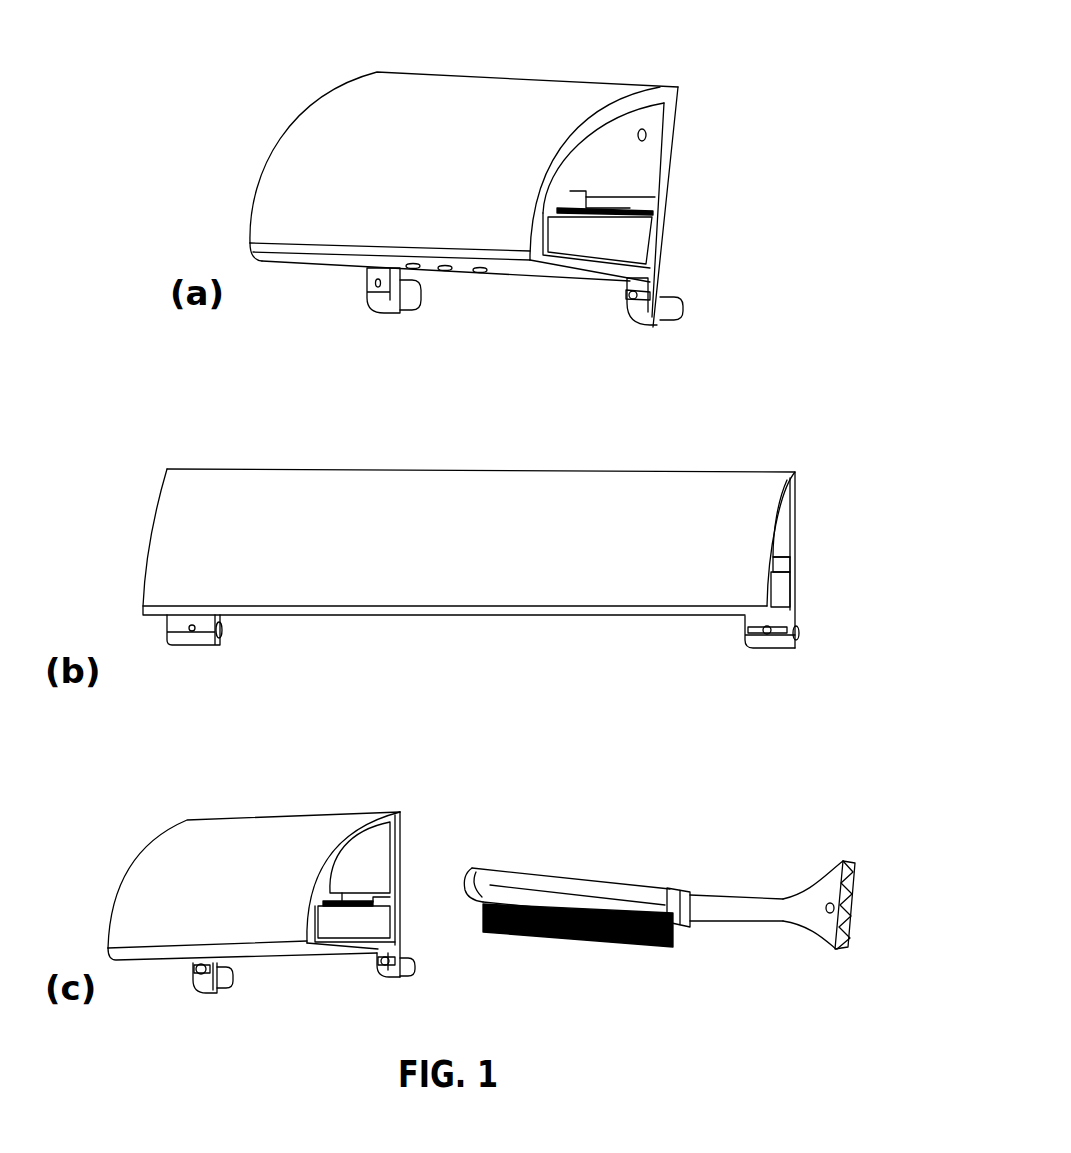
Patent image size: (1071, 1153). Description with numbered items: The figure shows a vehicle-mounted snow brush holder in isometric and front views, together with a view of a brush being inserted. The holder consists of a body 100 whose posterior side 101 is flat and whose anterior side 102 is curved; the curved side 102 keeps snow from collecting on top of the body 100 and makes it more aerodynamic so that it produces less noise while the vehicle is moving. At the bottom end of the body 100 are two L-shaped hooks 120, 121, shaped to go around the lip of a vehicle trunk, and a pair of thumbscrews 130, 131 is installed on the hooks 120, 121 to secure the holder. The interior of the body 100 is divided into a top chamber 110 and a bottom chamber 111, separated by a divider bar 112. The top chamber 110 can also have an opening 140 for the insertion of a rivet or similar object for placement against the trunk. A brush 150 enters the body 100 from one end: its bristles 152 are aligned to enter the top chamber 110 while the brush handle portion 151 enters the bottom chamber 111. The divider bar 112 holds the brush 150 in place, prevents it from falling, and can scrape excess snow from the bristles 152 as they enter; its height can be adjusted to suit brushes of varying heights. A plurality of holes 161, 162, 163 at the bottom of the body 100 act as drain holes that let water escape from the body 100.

The body 100 is at (474, 525).
The posterior side 101 is at (665, 267).
The anterior side 102 is at (318, 122).
The top chamber 110 is at (642, 177).
The bottom chamber 111 is at (637, 235).
The divider bar 112 is at (627, 207).
The hook 120 is at (662, 320).
The hook 121 is at (405, 314).
The thumbscrew 130 is at (625, 294).
The thumbscrew 131 is at (195, 966).
The opening 140 is at (645, 132).
The brush 150 is at (659, 897).
The brush handle portion 151 is at (557, 885).
The bristles 152 is at (520, 937).
The hole 161 is at (415, 268).
The hole 162 is at (445, 268).
The hole 163 is at (480, 270).